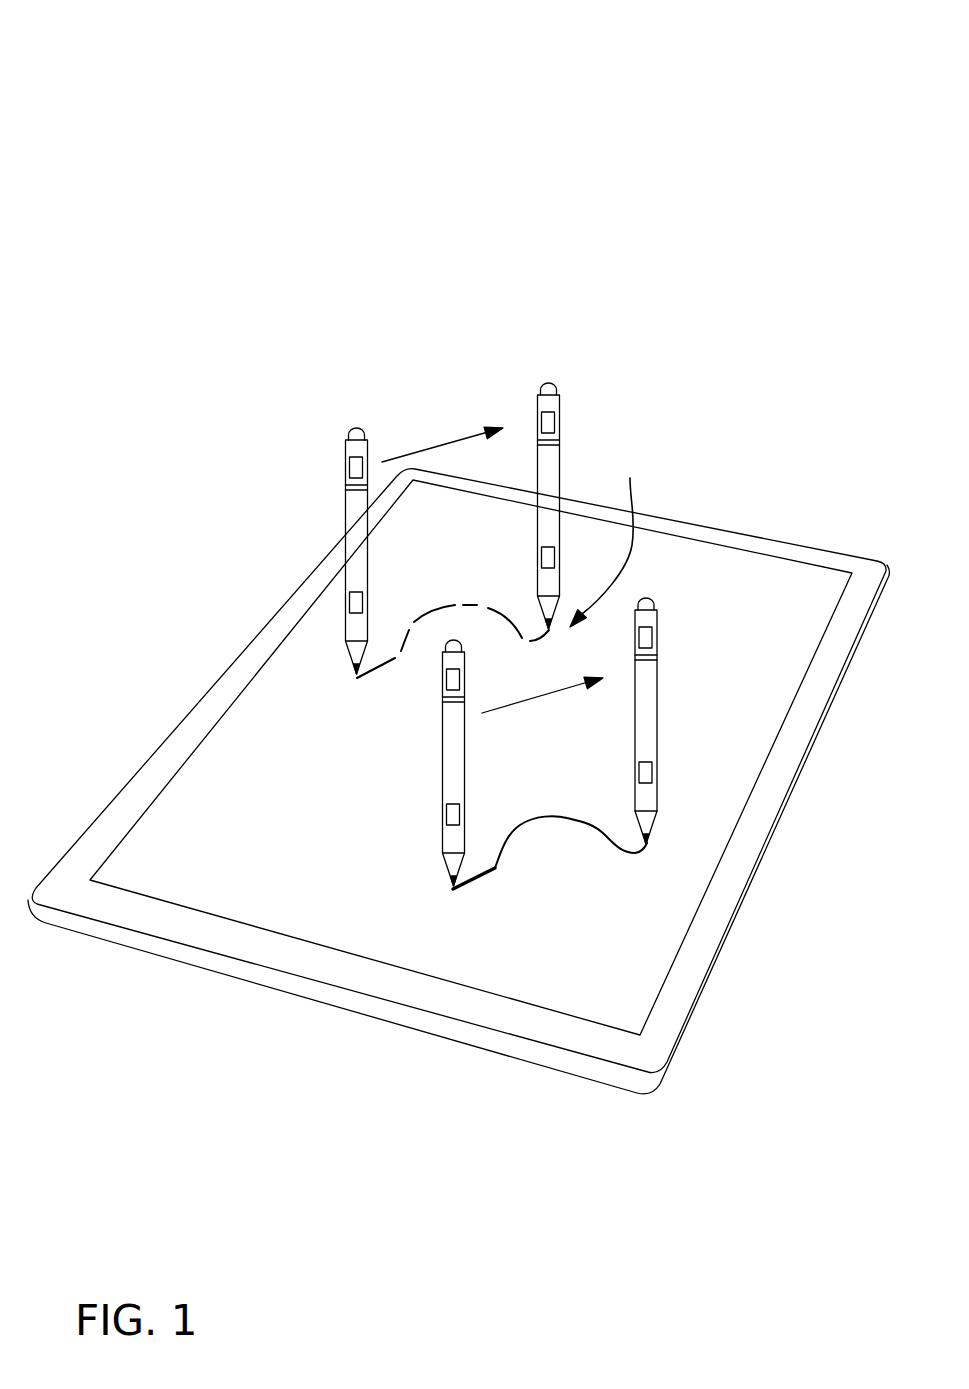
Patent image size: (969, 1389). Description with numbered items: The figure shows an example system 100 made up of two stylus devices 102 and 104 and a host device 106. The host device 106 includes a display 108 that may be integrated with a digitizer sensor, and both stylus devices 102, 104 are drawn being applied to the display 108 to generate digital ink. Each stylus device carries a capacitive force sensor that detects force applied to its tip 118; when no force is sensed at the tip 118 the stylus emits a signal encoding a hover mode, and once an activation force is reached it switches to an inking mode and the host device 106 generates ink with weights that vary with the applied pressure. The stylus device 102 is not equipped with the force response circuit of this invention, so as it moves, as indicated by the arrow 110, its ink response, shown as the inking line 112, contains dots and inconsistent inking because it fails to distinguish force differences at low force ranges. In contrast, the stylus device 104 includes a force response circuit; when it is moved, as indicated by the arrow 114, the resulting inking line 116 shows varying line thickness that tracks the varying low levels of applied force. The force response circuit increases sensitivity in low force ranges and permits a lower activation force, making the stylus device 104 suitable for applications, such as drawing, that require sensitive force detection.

The system 100 is at (143, 88).
The stylus device 102 is at (543, 382).
The stylus device 104 is at (651, 600).
The host device 106 is at (698, 524).
The display 108 is at (772, 555).
The arrow 110 is at (448, 440).
The inking line 112 is at (470, 605).
The arrow 114 is at (557, 693).
The inking line 116 is at (493, 870).
The tip 118 is at (630, 478).